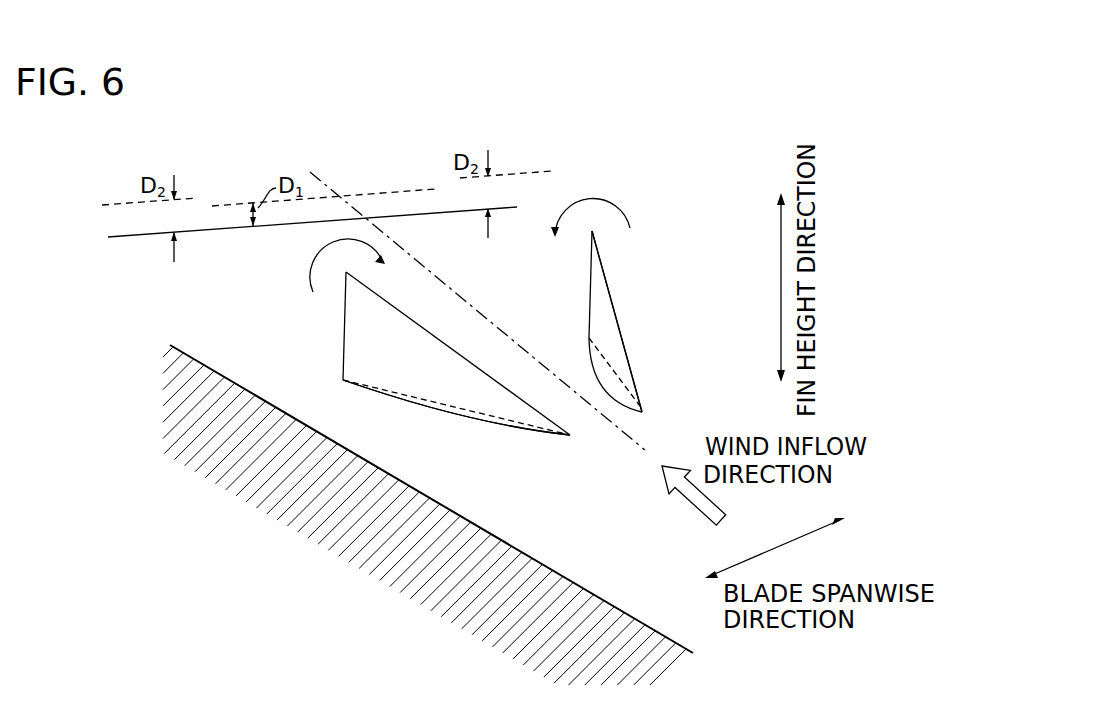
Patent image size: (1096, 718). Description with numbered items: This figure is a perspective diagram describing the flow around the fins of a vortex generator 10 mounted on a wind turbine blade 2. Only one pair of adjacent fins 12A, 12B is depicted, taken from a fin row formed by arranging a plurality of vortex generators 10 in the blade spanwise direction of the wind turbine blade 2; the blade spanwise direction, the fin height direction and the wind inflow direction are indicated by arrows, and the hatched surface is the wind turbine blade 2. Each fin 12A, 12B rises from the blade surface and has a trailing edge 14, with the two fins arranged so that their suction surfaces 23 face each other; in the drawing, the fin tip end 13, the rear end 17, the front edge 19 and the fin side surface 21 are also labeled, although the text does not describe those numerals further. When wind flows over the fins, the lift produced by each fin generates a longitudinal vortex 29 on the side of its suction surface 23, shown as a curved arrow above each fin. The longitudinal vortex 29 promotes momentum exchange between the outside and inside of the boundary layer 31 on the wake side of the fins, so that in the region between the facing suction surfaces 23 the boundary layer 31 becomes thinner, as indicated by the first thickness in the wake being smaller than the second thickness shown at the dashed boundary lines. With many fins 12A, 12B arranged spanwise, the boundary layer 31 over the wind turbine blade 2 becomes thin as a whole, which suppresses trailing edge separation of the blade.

The wind turbine blade 2 is at (582, 573).
The vortex generator 10 is at (616, 143).
The fin 12A is at (343, 345).
The fin 12B is at (620, 325).
The fin tip end portion 13 is at (346, 272).
The trailing edge 14 is at (530, 422).
The fin rear end 17 is at (570, 435).
The fin front edge 19 is at (343, 367).
The fin side surface 21 is at (433, 378).
The suction surface 23 is at (478, 383).
The longitudinal vortex 29 is at (316, 260).
The boundary layer 31 is at (388, 190).